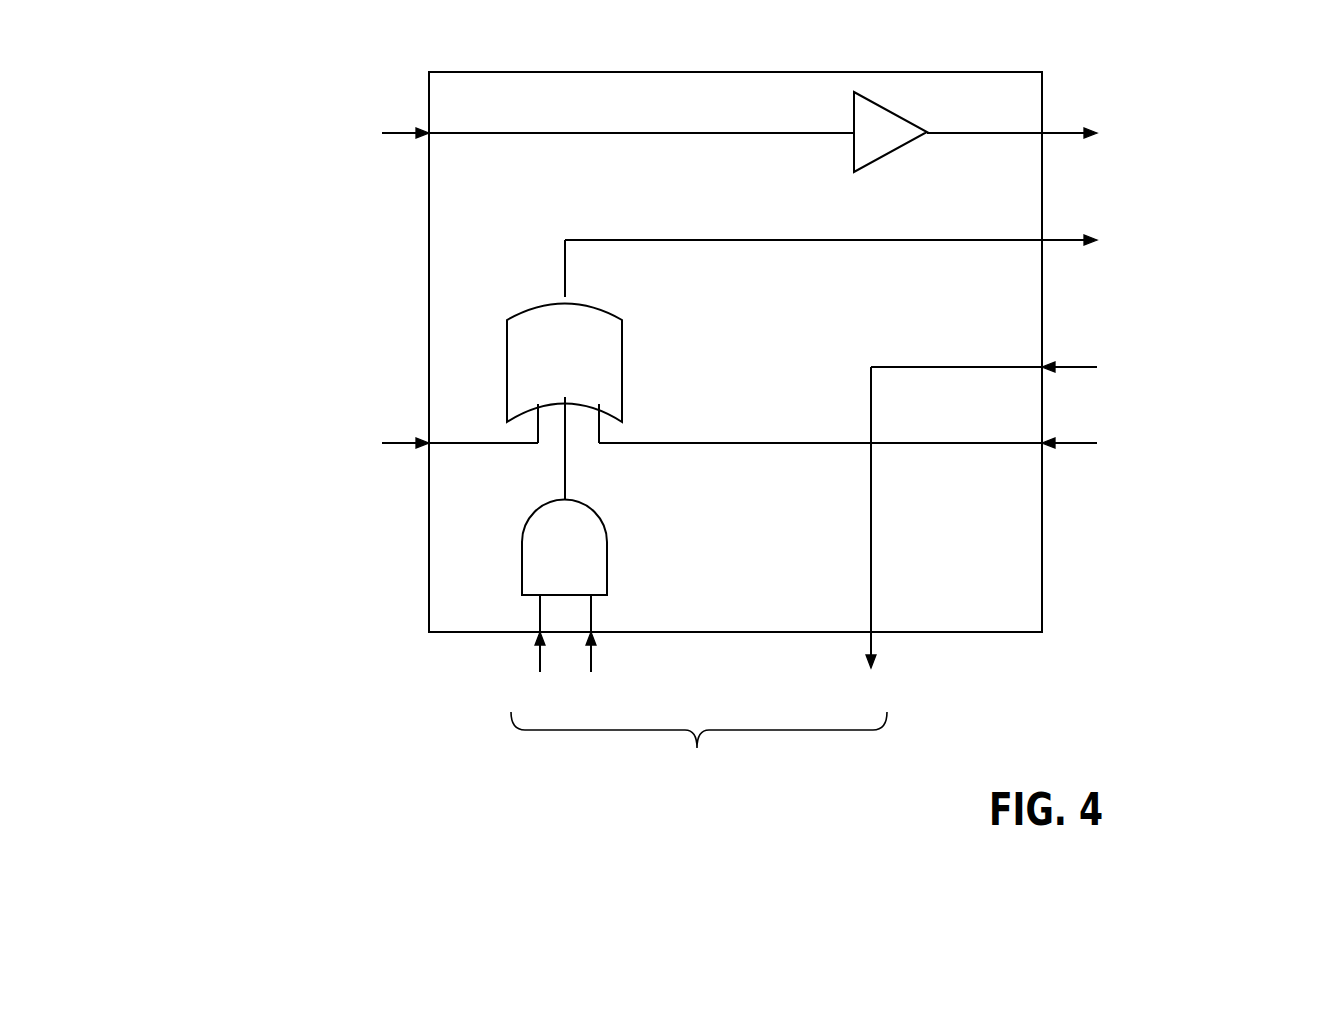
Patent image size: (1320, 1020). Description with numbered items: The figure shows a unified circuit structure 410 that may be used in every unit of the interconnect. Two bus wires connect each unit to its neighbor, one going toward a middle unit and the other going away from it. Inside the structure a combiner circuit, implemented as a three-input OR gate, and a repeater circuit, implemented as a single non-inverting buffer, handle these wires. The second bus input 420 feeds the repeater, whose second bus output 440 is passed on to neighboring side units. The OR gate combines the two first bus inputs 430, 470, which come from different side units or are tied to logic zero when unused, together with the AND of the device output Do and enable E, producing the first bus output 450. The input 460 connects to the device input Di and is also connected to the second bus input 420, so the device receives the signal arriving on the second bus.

The unified circuit structure 410 is at (429, 258).
The second bus input 420 is at (398, 130).
The first bus input 430 is at (405, 445).
The second bus output 440 is at (1055, 130).
The first bus output 450 is at (1055, 235).
The input connecting to device input Di 460 is at (1060, 362).
The first bus input 470 is at (1070, 440).